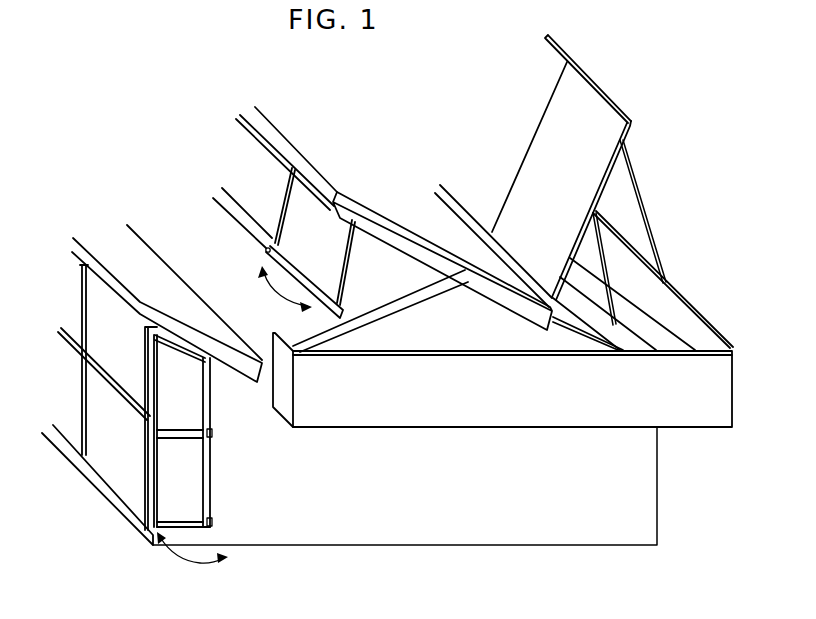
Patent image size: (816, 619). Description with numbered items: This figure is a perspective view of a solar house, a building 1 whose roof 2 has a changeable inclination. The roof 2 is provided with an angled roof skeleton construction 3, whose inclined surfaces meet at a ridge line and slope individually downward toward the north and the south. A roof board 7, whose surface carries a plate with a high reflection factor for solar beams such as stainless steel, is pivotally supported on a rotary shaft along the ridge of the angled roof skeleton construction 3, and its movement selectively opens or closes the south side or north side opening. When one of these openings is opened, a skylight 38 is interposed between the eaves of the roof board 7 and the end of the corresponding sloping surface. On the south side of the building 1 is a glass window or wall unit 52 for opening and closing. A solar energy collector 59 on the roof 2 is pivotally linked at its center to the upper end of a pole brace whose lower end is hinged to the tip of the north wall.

The building 1 is at (410, 146).
The roof 2 is at (507, 338).
The angled roof skeleton construction 3 is at (445, 337).
The roof board 7 is at (403, 246).
The skylight 38 is at (267, 250).
The solar energy collector 59 is at (602, 118).
The glass window or wall unit 52 is at (115, 465).